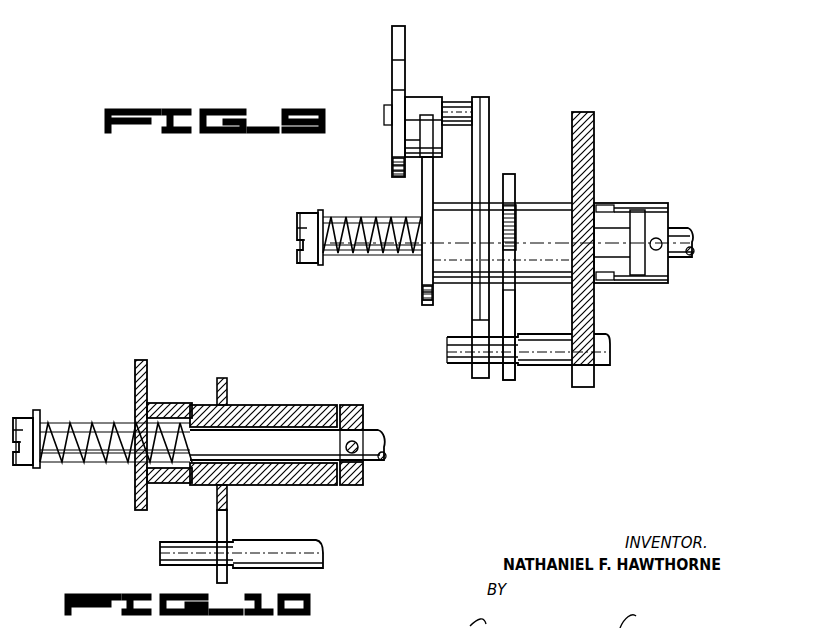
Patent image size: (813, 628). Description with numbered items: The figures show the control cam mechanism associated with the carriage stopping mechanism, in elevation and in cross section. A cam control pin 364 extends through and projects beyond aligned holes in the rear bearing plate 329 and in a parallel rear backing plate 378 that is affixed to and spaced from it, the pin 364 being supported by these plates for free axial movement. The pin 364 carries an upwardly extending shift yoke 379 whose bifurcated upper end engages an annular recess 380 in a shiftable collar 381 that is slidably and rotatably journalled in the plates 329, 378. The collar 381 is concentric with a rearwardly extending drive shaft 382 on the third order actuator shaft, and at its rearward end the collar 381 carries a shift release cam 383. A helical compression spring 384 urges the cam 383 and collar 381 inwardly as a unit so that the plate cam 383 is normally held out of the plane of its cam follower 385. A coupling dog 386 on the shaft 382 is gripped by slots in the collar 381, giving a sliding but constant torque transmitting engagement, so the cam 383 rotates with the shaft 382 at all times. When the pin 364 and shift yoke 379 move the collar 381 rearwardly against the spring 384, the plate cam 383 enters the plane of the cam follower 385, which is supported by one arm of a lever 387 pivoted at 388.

In FIG. 9, the rear bearing plate 329 is at (583, 308).
In FIG. 9, the cam control pin 364 is at (543, 348).
In FIG. 10, the cam control pin 364 is at (278, 552).
In FIG. 9, the rear backing plate 378 is at (483, 118).
In FIG. 9, the shift yoke 379 is at (507, 311).
In FIG. 10, the shift yoke 379 is at (222, 380).
In FIG. 9, the annular recess 380 is at (517, 230).
In FIG. 9, the shiftable collar 381 is at (525, 213).
In FIG. 10, the shiftable collar 381 is at (322, 420).
In FIG. 9, the drive shaft 382 is at (330, 236).
In FIG. 10, the drive shaft 382 is at (62, 430).
In FIG. 9, the shift release cam 383 is at (427, 197).
In FIG. 10, the shift release cam 383 is at (145, 362).
In FIG. 9, the helical compression spring 384 is at (363, 238).
In FIG. 10, the helical compression spring 384 is at (72, 455).
In FIG. 9, the cam follower 385 is at (418, 135).
In FIG. 9, the coupling dog 386 is at (656, 176).
In FIG. 10, the coupling dog 386 is at (348, 405).
In FIG. 9, the lever 387 is at (400, 62).
In FIG. 9, the pivot 388 is at (462, 108).